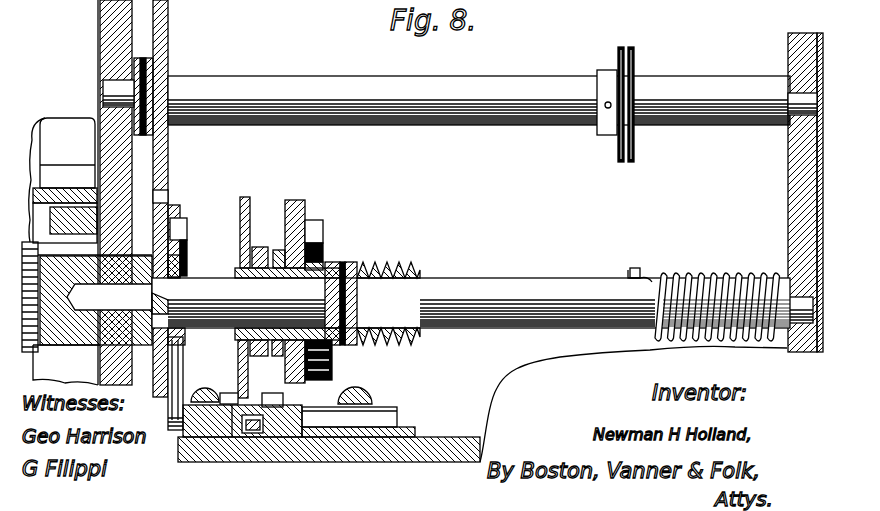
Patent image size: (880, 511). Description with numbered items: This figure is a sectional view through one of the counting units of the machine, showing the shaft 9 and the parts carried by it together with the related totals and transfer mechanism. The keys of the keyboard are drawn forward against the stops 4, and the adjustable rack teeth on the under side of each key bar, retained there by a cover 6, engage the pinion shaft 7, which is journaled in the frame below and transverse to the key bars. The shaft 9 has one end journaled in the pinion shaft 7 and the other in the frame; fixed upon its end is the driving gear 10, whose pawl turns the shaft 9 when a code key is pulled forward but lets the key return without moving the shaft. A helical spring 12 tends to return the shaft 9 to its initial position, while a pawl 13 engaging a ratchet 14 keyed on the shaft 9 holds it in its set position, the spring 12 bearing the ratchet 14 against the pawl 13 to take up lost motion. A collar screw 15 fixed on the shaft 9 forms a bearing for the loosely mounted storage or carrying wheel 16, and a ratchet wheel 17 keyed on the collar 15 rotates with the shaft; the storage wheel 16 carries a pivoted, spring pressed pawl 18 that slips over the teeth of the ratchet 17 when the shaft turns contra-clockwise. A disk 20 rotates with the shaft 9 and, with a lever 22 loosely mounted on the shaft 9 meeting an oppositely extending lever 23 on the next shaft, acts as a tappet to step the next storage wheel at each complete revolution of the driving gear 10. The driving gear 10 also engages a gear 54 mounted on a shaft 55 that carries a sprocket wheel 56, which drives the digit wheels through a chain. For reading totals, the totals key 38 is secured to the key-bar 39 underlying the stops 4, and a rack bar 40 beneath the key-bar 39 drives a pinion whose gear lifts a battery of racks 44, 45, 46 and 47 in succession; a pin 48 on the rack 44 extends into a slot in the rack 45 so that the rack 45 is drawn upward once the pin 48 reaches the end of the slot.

The stops 4 is at (46, 120).
The totals key 38 is at (67, 153).
The key-bar 39 is at (65, 180).
The rack bar 40 is at (65, 223).
The cover 6 is at (118, 258).
The pinion shaft 7 is at (38, 344).
The gear 54 is at (168, 33).
The shaft 55 is at (505, 74).
The sprocket wheel 56 is at (635, 56).
The driving gear 10 is at (170, 215).
The pawl 13 is at (188, 226).
The ratchet 14 is at (188, 266).
The disk 20 is at (245, 196).
The storage or carrying wheel 16 is at (293, 200).
The lever 22 is at (279, 247).
The lever 23 is at (276, 252).
The pawl 18 is at (323, 228).
The ratchet wheel 17 is at (326, 262).
The collar screw 15 is at (360, 263).
The shaft 9 is at (506, 280).
The helical spring 12 is at (653, 272).
The rack 47 is at (228, 392).
The rack 46 is at (256, 392).
The pin 48 is at (288, 408).
The rack 45 is at (268, 436).
The rack 44 is at (300, 440).